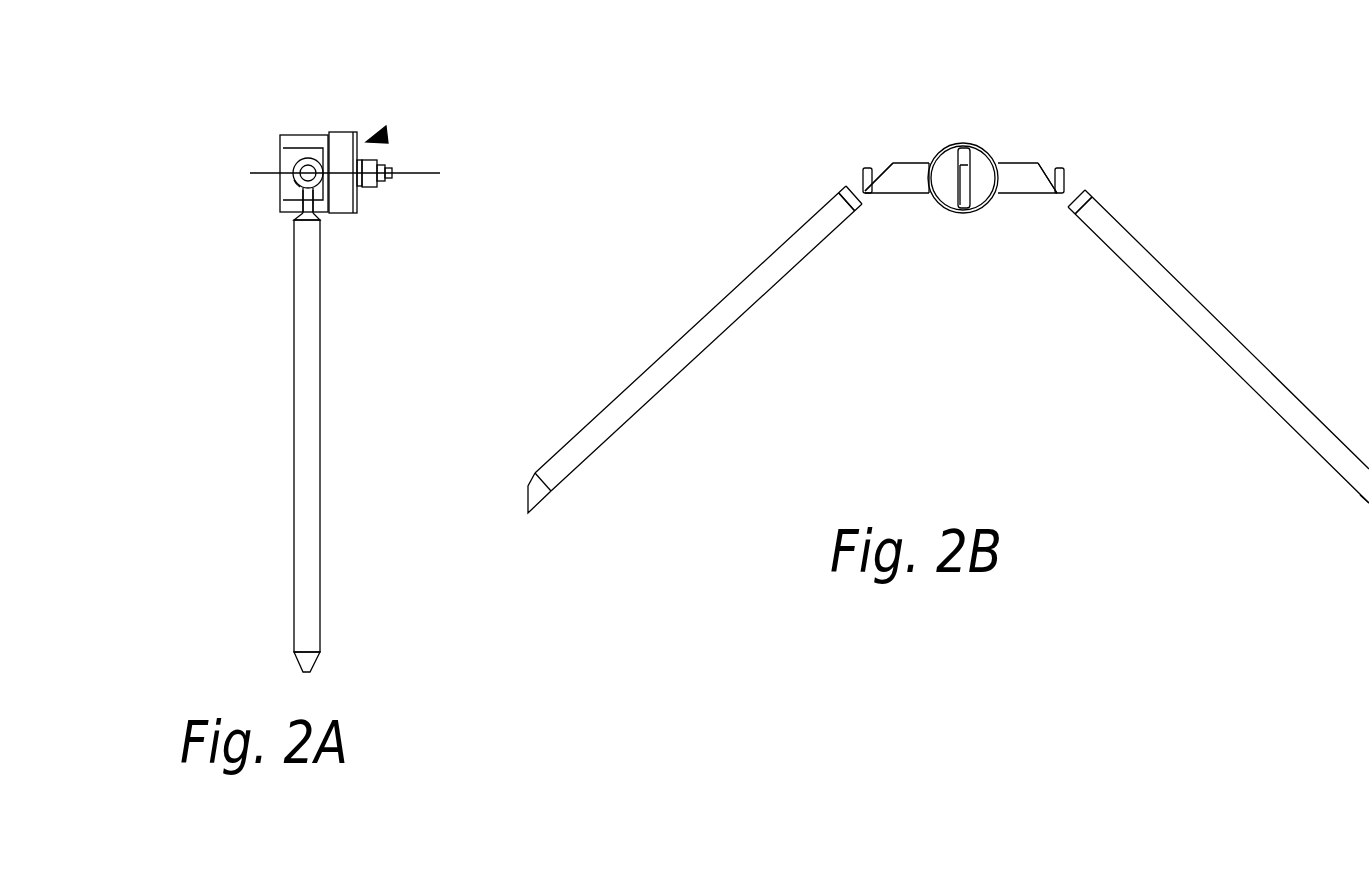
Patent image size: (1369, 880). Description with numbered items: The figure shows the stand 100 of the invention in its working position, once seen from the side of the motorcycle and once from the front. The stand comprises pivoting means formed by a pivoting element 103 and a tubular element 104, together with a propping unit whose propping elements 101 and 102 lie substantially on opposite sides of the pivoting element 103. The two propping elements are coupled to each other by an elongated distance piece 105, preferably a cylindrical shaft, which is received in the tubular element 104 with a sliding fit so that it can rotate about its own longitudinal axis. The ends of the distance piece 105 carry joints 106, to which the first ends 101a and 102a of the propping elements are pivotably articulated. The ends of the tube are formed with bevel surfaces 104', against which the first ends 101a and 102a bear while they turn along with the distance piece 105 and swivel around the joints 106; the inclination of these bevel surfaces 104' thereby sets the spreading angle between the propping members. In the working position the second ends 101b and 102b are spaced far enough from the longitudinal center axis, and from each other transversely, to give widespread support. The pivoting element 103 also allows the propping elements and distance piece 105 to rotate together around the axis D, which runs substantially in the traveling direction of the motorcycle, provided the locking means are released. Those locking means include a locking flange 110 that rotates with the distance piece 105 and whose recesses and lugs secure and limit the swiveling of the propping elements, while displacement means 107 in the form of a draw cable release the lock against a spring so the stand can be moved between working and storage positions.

In FIG. 2A, the stand 100 is at (388, 133).
In FIG. 2A, the propping element 101 is at (295, 560).
In FIG. 2B, the propping element 101 is at (1208, 315).
In FIG. 2A, the first end of propping element 101a is at (315, 210).
In FIG. 2B, the first end of propping element 101a is at (1063, 204).
In FIG. 2A, the second end of propping element 101b is at (310, 662).
In FIG. 2B, the second end of propping element 101b is at (1360, 517).
In FIG. 2B, the propping element 102 is at (803, 250).
In FIG. 2B, the first end of propping element 102a is at (863, 204).
In FIG. 2B, the second end of propping element 102b is at (543, 500).
In FIG. 2A, the pivoting element 103 is at (307, 132).
In FIG. 2B, the pivoting element 103 is at (996, 163).
In FIG. 2A, the tubular element 104 is at (269, 137).
In FIG. 2B, the tubular element 104 is at (950, 132).
In FIG. 2B, the bevel surface 104' is at (971, 158).
In FIG. 2A, the distance piece 105 is at (330, 130).
In FIG. 2B, the distance piece 105 is at (872, 162).
In FIG. 2A, the joint 106 is at (292, 184).
In FIG. 2B, the joint 106 is at (868, 173).
In FIG. 2A, the displacement means 107 is at (392, 173).
In FIG. 2B, the locking flange 110 is at (963, 208).
In FIG. 2A, the axis D is at (262, 177).